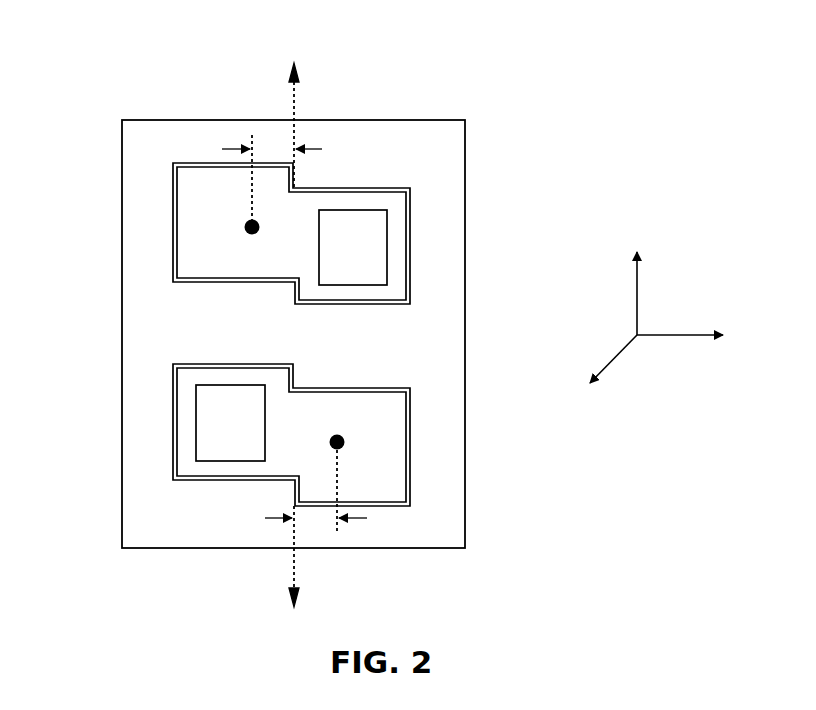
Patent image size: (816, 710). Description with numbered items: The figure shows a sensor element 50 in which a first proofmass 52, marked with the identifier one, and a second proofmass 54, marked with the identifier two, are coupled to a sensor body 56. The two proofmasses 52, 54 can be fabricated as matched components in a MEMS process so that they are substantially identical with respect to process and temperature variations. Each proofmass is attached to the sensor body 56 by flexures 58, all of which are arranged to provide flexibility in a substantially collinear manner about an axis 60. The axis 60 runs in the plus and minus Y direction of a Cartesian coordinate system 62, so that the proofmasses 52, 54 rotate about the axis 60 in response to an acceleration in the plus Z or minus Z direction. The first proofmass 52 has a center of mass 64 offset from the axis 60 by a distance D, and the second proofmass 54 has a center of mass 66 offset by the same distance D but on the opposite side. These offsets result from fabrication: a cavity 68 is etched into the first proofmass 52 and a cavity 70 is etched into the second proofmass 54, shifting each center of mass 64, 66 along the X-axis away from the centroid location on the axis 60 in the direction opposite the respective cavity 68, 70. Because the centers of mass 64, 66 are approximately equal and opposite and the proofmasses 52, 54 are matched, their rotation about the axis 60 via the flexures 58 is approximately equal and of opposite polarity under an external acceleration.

The sensor element 50 is at (78, 76).
The first proofmass 52 is at (192, 163).
The second proofmass 54 is at (192, 364).
The sensor body 56 is at (293, 334).
The flexures 58 is at (296, 186).
The axis 60 is at (294, 112).
The Cartesian coordinate system 62 is at (714, 246).
The center of mass 64 is at (247, 233).
The center of mass 66 is at (343, 436).
The cavity 68 is at (387, 240).
The cavity 70 is at (196, 418).